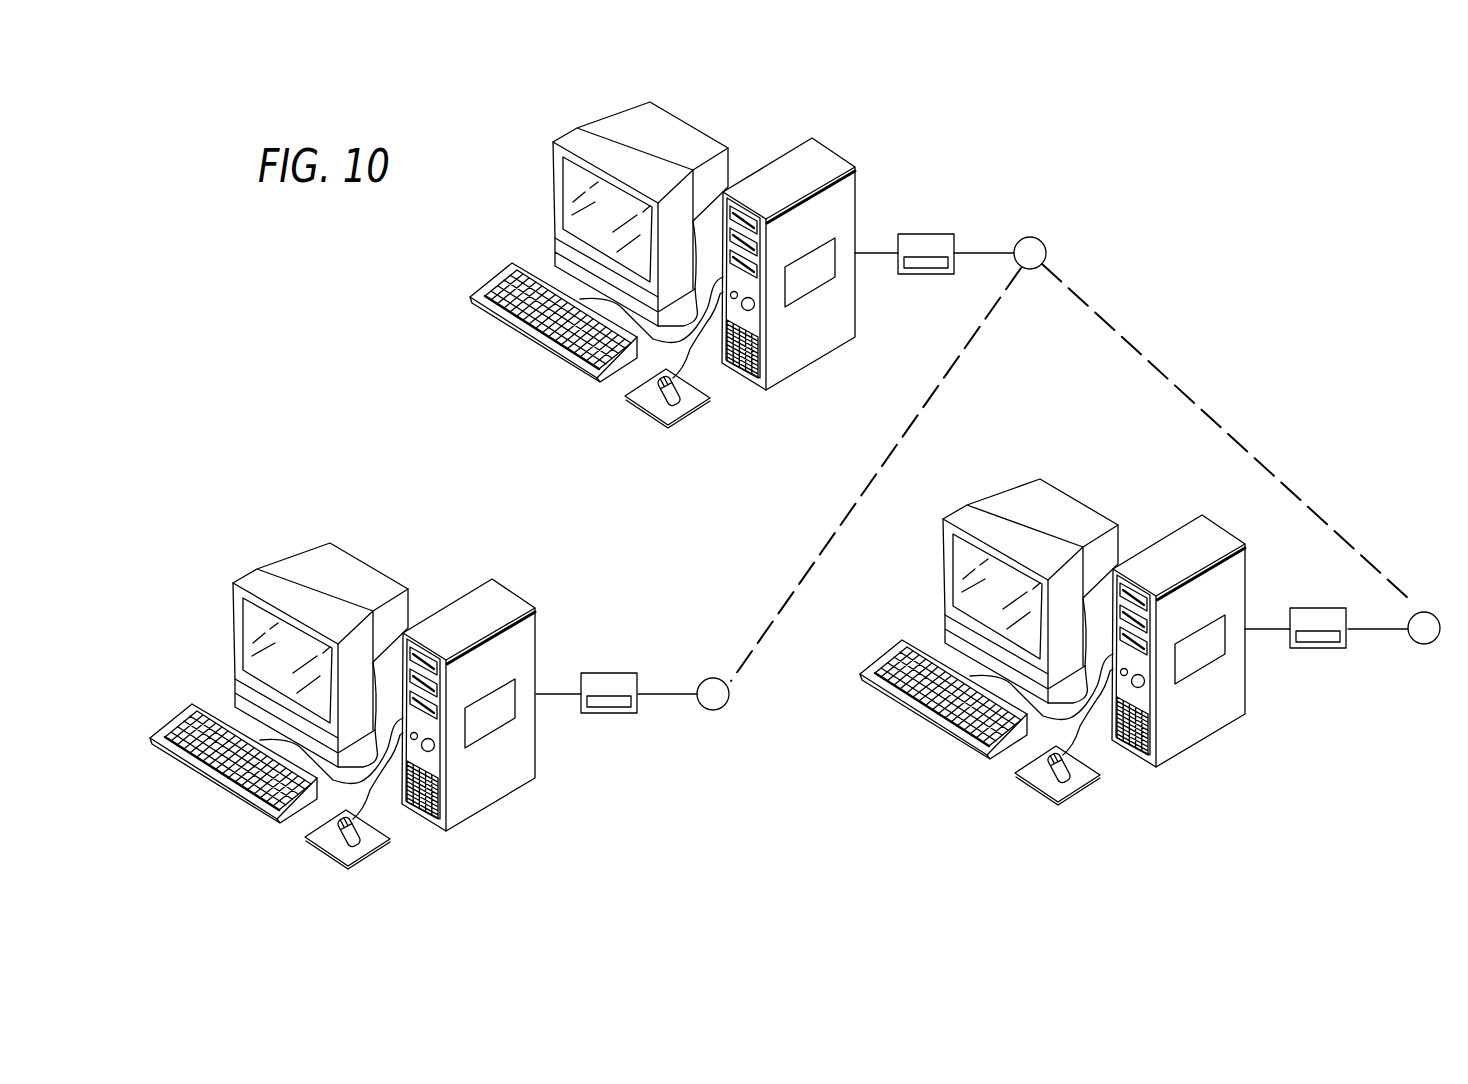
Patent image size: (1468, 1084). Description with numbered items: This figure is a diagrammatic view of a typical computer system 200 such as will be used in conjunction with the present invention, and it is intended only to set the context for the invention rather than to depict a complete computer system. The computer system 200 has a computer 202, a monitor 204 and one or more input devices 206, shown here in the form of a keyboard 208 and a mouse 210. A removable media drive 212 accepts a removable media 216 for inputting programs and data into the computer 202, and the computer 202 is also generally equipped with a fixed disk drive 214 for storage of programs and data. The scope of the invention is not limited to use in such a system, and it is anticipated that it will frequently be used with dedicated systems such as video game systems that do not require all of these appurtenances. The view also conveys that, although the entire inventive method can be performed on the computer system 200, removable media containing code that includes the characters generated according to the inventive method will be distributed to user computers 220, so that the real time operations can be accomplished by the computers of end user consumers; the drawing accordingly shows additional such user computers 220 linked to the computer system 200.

The computer system 200 is at (747, 135).
The computer 202 is at (795, 175).
The monitor 204 is at (552, 198).
The input devices 206 is at (510, 389).
The keyboard 208 is at (488, 277).
The mouse 210 is at (645, 393).
The removable media drive 212 is at (940, 234).
The fixed disk drive 214 is at (1032, 238).
The removable media 216 is at (853, 305).
The user computers 220 is at (435, 568).